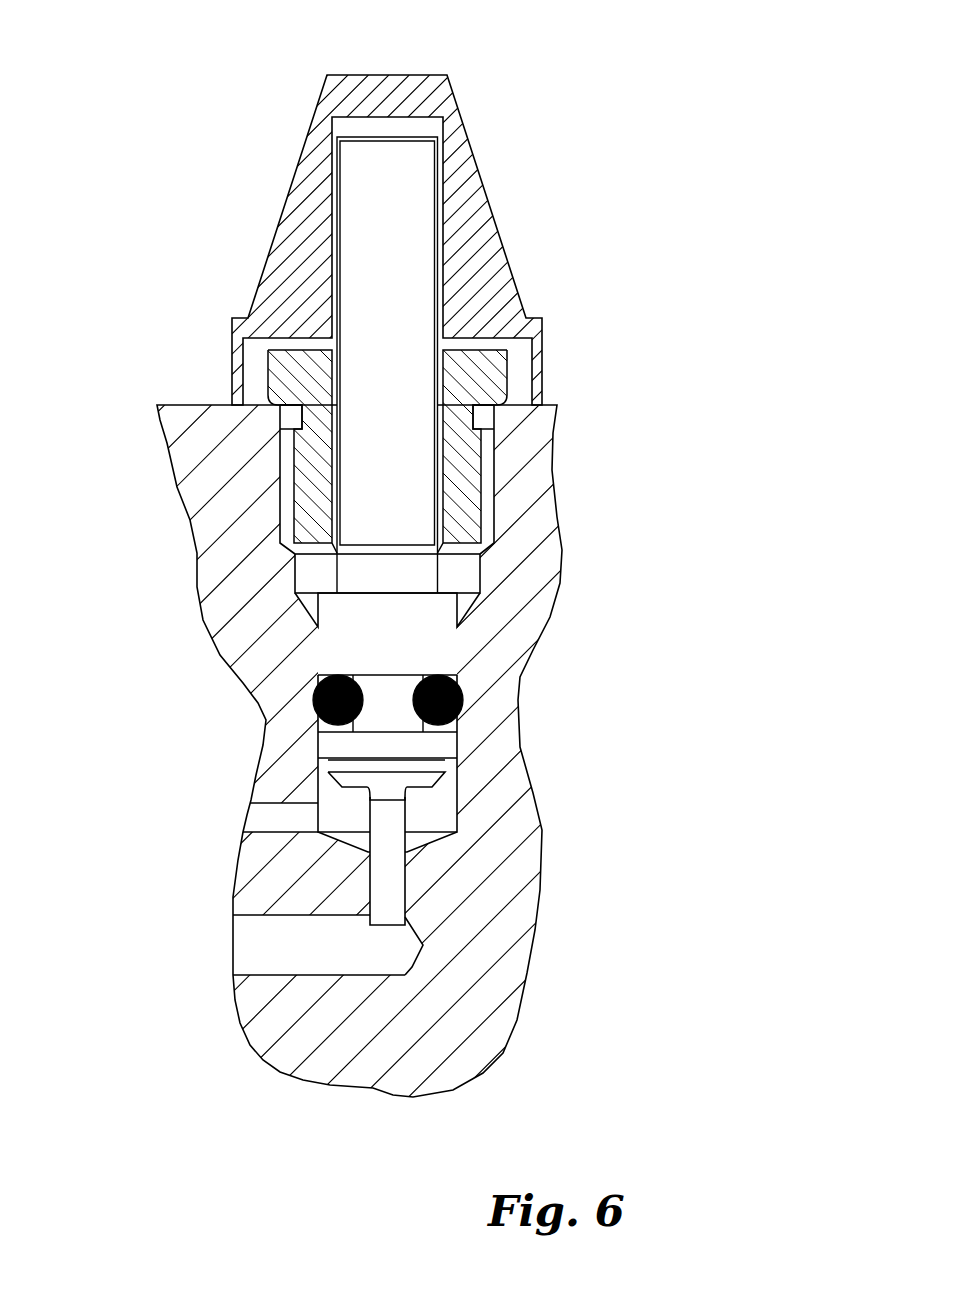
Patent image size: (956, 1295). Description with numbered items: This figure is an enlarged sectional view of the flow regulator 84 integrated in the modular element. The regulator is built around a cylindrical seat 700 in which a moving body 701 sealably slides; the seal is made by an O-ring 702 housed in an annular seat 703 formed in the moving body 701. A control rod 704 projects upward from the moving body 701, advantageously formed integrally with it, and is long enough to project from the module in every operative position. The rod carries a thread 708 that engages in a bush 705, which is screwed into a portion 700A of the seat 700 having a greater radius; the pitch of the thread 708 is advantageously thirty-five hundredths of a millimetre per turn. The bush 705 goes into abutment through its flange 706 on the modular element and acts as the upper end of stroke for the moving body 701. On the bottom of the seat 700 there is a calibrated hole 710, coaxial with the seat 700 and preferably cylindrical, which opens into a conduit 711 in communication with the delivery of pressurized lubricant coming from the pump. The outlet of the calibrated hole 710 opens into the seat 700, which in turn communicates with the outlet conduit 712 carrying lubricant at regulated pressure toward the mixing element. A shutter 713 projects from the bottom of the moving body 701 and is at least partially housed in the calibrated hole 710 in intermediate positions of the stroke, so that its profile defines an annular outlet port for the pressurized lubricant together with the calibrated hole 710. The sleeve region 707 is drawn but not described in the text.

The flow regulator 84 is at (424, 303).
The control rod 704 is at (397, 218).
The bush 705 is at (492, 375).
The flange 706 is at (503, 410).
The sleeve gap 707 is at (288, 457).
The thread 708 is at (329, 382).
The cylindrical seat 700 is at (458, 650).
The portion having greater radius of the seat 700A is at (482, 573).
The moving body 701 is at (427, 618).
The O-ring 702 is at (313, 708).
The annular seat 703 is at (327, 671).
The calibrated hole 710 is at (407, 883).
The conduit 711 is at (273, 937).
The outlet conduit 712 is at (275, 817).
The shutter 713 is at (384, 893).